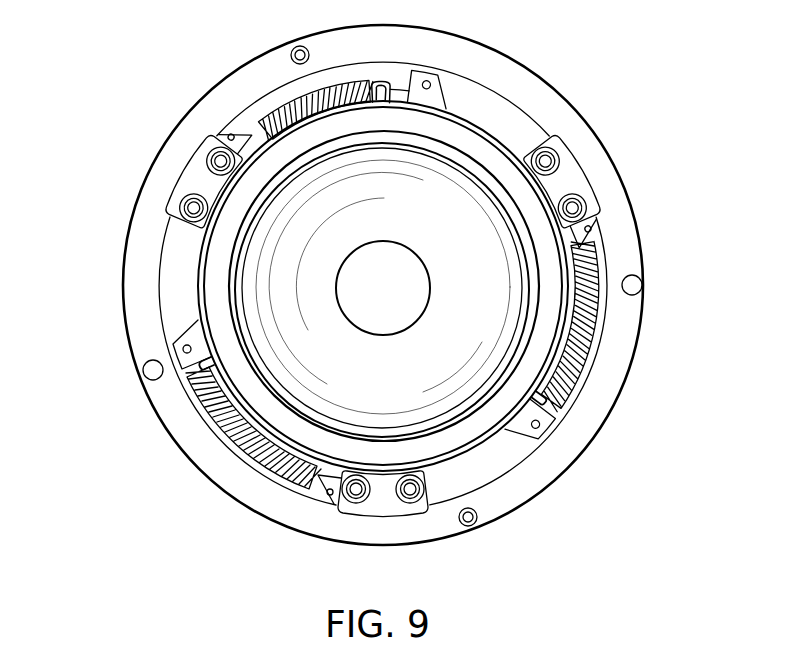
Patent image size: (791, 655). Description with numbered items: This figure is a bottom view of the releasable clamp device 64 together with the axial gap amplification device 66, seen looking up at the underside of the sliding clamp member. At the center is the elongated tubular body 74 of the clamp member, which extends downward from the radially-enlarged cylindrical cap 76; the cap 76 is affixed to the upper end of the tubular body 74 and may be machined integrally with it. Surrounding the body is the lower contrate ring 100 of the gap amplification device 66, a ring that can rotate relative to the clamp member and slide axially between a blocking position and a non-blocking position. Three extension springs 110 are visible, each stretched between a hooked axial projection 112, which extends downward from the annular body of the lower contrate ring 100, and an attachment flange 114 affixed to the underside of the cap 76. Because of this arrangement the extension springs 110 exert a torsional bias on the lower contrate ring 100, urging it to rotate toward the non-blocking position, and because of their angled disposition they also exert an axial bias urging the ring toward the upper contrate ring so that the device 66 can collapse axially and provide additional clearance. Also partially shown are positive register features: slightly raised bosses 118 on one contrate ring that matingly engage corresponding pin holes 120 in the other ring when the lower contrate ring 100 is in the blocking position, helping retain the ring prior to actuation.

The releasable clamp device 64 is at (167, 279).
The axial gap amplification device 66 is at (113, 94).
The tubular body 74 is at (486, 160).
The cylindrical cap 76 is at (504, 134).
The lower contrate ring 100 is at (632, 242).
The extension springs 110 is at (290, 108).
The hooked axial projections 112 is at (437, 86).
The attachment flanges 114 is at (200, 168).
The raised protrusions or bosses 118 is at (298, 48).
The pin holes 120 is at (643, 285).